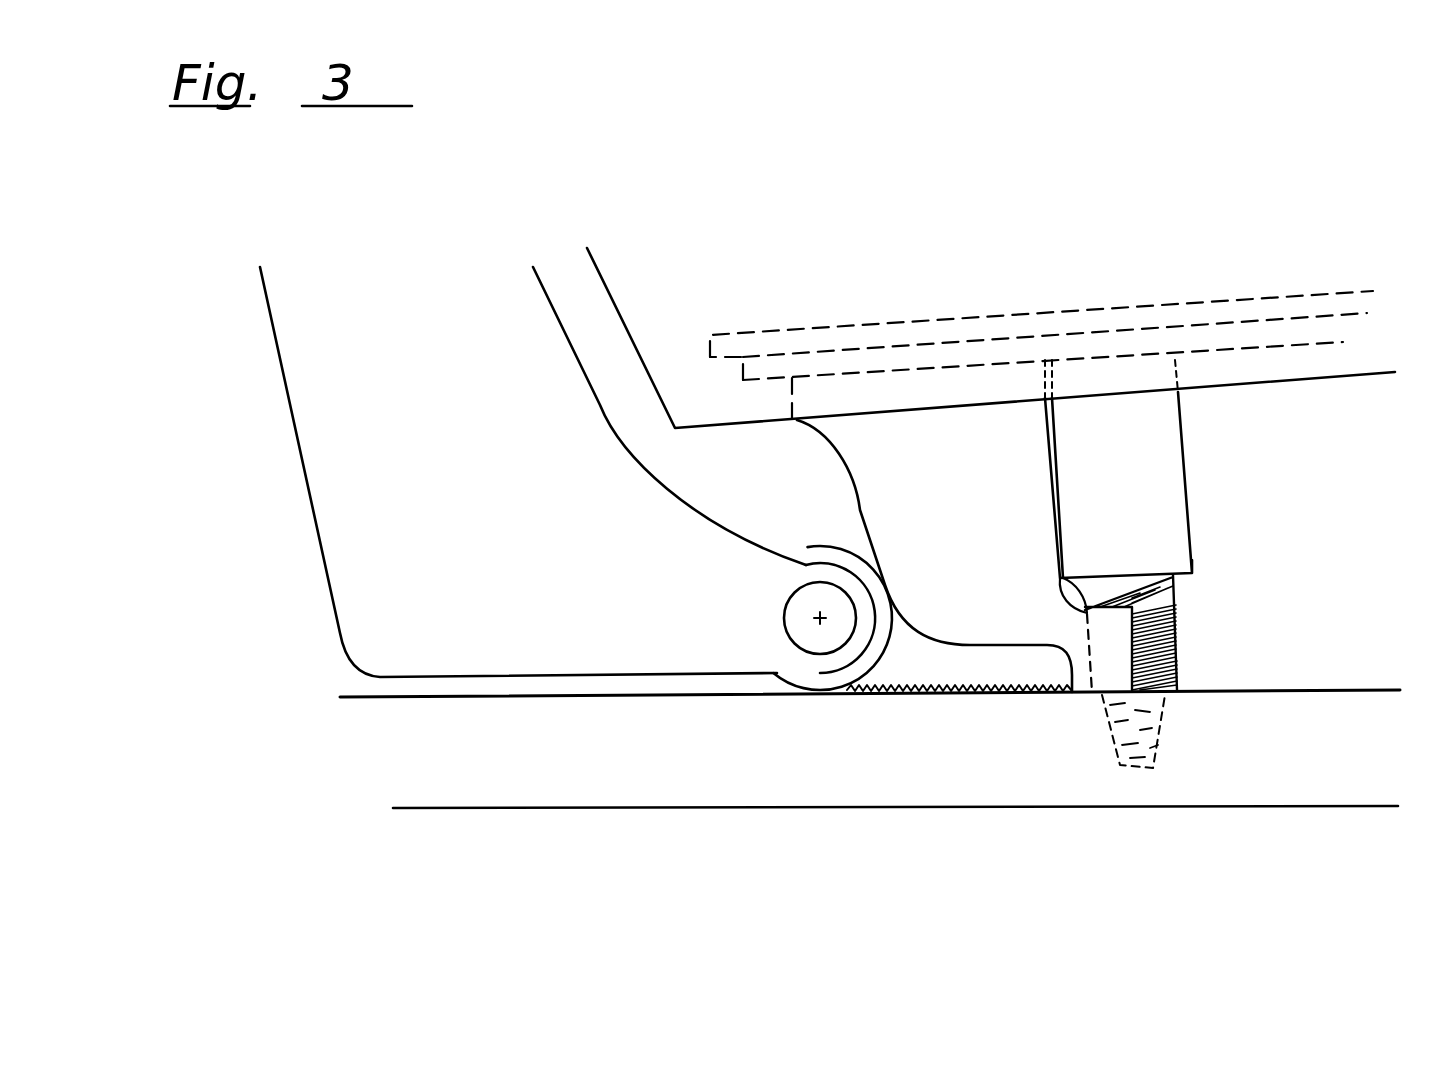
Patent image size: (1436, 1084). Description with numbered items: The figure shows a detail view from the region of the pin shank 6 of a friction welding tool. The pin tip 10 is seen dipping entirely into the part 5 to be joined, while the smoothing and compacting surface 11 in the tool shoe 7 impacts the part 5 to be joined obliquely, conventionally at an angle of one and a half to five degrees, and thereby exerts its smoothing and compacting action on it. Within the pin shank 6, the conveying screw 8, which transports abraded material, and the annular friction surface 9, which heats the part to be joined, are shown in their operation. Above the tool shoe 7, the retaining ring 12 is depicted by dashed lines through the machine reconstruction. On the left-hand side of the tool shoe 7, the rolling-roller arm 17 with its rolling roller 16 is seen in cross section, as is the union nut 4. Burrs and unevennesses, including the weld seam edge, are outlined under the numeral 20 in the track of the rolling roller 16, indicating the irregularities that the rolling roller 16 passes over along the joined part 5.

The union nut 4 is at (613, 302).
The part to be joined 5 is at (1253, 692).
The pin shank 6 is at (1140, 452).
The tool shoe 7 is at (1018, 598).
The conveying screw 8 is at (1173, 627).
The annular friction surface 9 is at (1175, 695).
The pin tip 10 is at (1157, 727).
The smoothing and compacting surface 11 is at (1090, 692).
The retaining ring 12 is at (883, 332).
The rolling roller 16 is at (817, 677).
The rolling-roller arm 17 is at (353, 442).
The burrs and unevennesses 20 is at (908, 693).